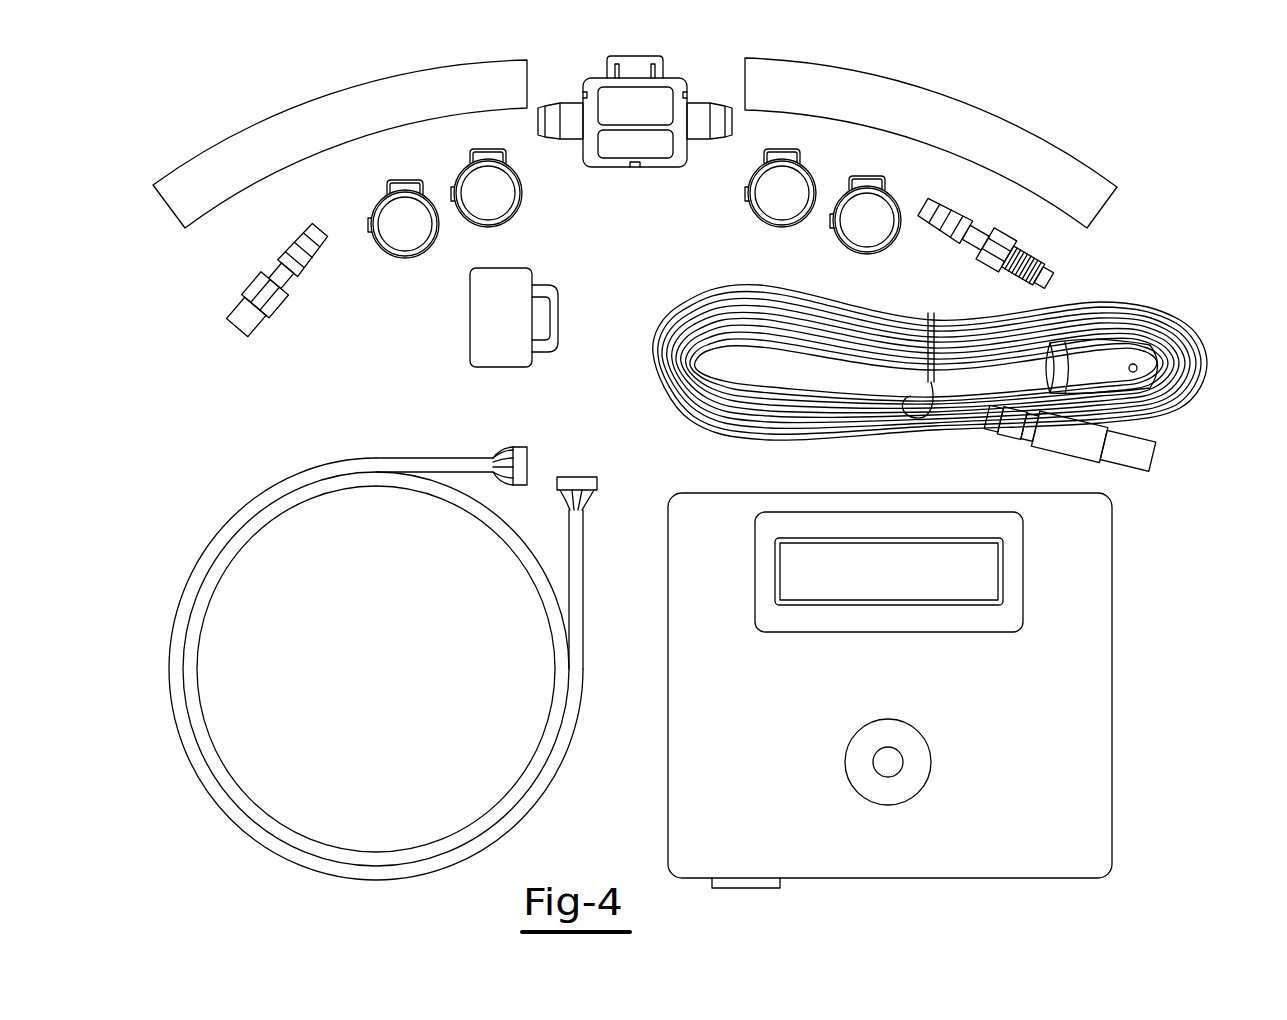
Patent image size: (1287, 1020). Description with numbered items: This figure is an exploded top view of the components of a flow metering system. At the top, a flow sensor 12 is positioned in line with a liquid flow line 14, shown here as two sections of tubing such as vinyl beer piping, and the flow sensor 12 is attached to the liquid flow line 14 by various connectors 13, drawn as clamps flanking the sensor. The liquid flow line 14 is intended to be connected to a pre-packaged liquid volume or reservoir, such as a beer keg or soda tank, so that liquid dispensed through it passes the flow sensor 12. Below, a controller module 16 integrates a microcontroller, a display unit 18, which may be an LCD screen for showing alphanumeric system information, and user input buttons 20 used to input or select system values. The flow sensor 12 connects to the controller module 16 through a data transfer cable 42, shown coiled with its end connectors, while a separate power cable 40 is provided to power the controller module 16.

The flow sensor 12 is at (556, 55).
The connectors 13 is at (510, 220).
The liquid flow line 14 is at (335, 113).
The controller module 16 is at (934, 690).
The display unit 18 is at (937, 580).
The user input buttons 20 is at (900, 777).
The power cable 40 is at (1157, 305).
The data transfer cable 42 is at (263, 847).